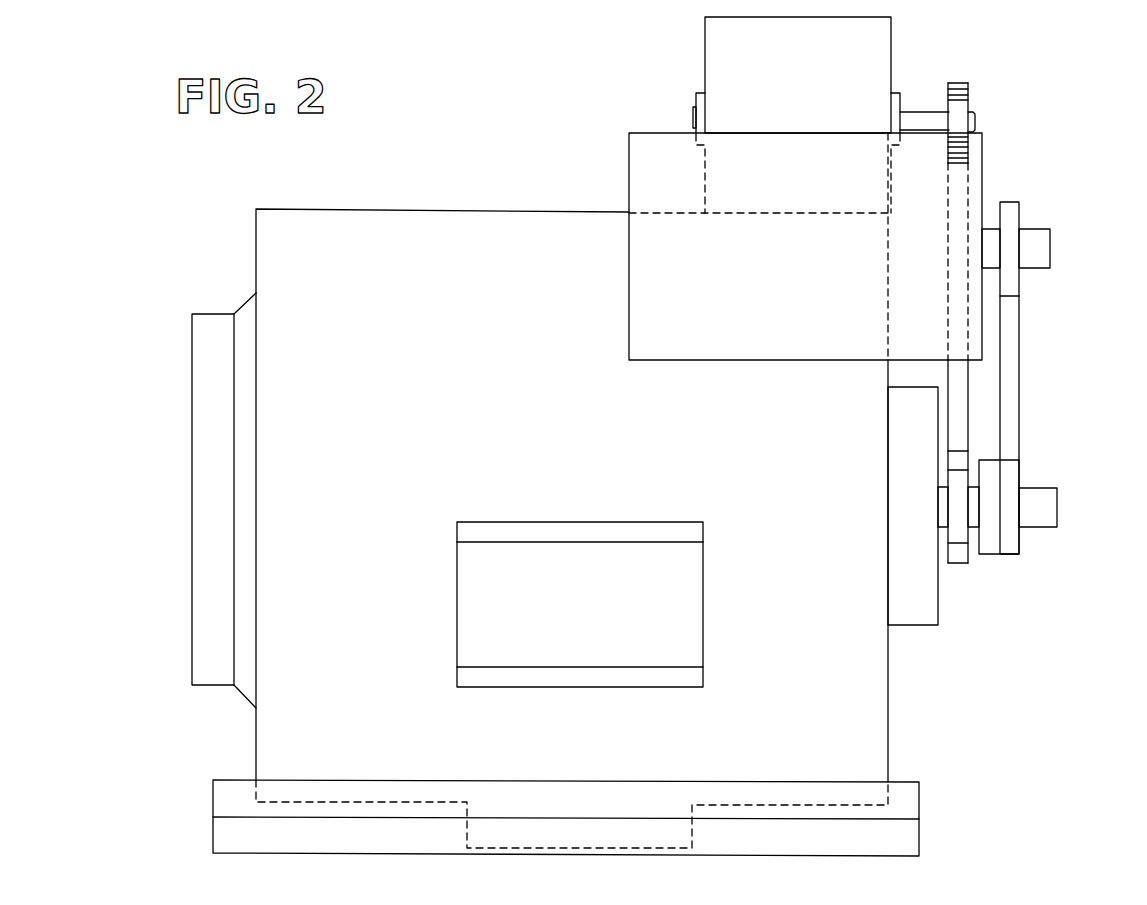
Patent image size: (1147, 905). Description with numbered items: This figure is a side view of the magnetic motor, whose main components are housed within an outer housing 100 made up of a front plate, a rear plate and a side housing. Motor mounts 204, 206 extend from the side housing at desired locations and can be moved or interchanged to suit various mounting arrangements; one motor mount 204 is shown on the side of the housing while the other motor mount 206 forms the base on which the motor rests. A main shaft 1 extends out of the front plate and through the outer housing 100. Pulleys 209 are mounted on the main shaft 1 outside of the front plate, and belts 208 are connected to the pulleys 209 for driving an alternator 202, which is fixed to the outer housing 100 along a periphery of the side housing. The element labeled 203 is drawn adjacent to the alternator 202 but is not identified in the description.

The outer housing 100 is at (407, 386).
The alternator 202 is at (717, 243).
The motor 203 is at (753, 70).
The motor mount 204 is at (590, 624).
The motor mount 206 is at (893, 846).
The belts 208 is at (957, 382).
The pulleys 209 is at (957, 556).
The main shaft 1 is at (1037, 508).